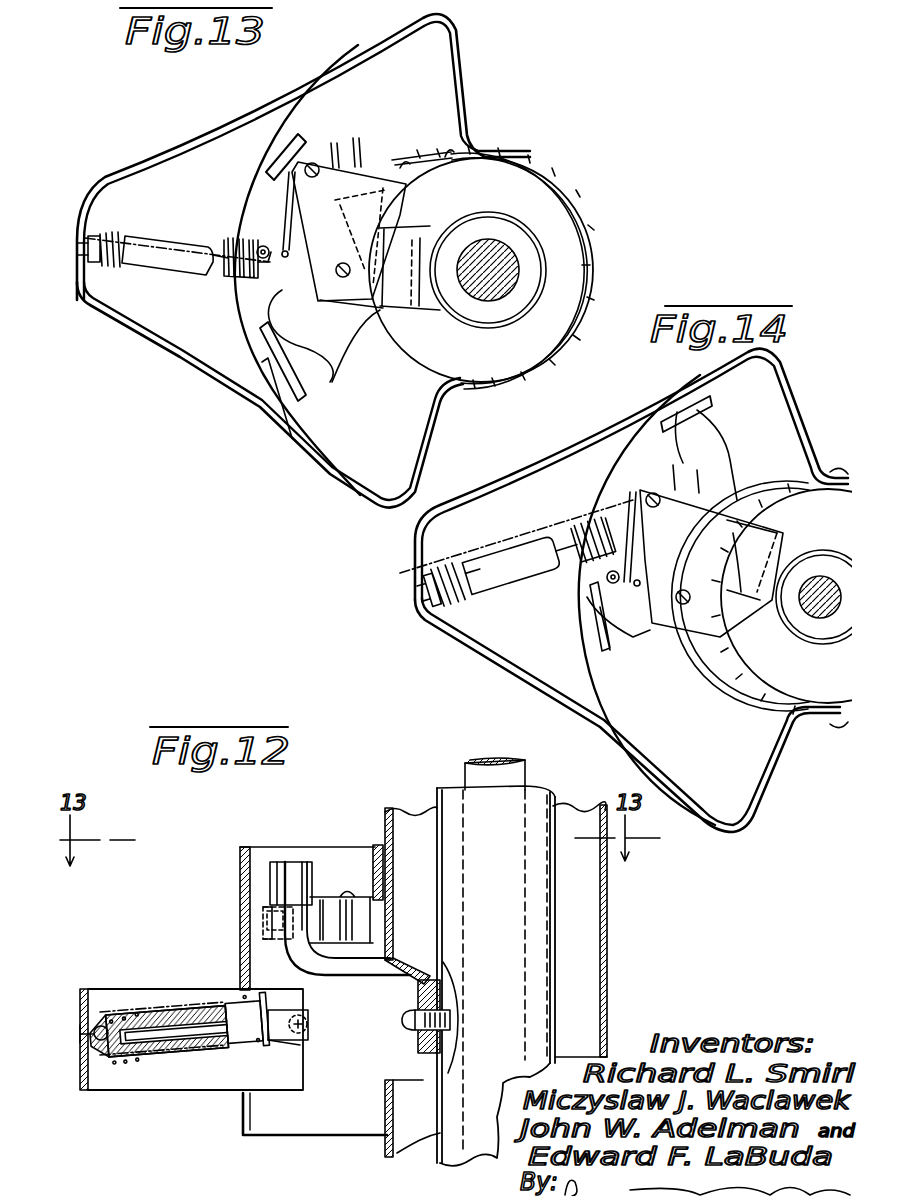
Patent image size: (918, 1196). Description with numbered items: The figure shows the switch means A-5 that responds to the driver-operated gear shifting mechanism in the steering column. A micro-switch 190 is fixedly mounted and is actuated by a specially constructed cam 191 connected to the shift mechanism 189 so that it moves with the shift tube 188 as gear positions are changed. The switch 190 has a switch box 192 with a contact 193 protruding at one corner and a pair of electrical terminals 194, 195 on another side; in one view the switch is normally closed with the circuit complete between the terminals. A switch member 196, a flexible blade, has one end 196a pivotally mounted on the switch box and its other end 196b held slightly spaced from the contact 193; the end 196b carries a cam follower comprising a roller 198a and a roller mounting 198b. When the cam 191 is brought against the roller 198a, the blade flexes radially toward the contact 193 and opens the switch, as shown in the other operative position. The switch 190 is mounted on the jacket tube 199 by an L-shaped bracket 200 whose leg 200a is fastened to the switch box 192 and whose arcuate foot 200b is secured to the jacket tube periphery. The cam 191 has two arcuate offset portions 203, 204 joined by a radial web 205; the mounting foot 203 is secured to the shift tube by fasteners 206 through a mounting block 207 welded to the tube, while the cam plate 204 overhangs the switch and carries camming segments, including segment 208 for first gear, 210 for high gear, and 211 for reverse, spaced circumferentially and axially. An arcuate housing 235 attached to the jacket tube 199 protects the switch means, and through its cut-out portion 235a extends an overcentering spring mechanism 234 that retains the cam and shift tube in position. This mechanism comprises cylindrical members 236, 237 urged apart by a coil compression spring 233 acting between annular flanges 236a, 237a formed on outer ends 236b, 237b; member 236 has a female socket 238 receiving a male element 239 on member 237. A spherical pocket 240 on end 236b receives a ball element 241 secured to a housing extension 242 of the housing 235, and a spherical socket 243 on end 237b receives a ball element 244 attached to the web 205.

In FIG. 13, the shift tube 188 is at (520, 207).
In FIG. 12, the shift tube 188 is at (460, 777).
In FIG. 13, the shift mechanism 189 is at (557, 259).
In FIG. 14, the shift mechanism 189 is at (820, 597).
In FIG. 12, the shift mechanism 189 is at (567, 952).
In FIG. 13, the micro-switch 190 is at (307, 296).
In FIG. 13, the cam 191 is at (356, 369).
In FIG. 13, the switch box 192 is at (380, 183).
In FIG. 12, the switch box 192 is at (362, 947).
In FIG. 13, the contact 193 is at (290, 253).
In FIG. 14, the contact 193 is at (645, 582).
In FIG. 13, the electrical terminal 194 is at (333, 142).
In FIG. 13, the electrical terminal 195 is at (357, 142).
In FIG. 13, the switch member 196 is at (280, 178).
In FIG. 14, the switch member 196 is at (625, 519).
In FIG. 13, the blade element end 196a is at (292, 150).
In FIG. 13, the blade element end 196b is at (338, 205).
In FIG. 13, the roller 198a is at (258, 248).
In FIG. 14, the roller 198a is at (598, 592).
In FIG. 12, the roller 198a is at (262, 922).
In FIG. 13, the roller mounting 198b is at (268, 233).
In FIG. 13, the jacket tube 199 is at (570, 197).
In FIG. 14, the jacket tube 199 is at (819, 596).
In FIG. 12, the jacket tube 199 is at (608, 900).
In FIG. 13, the bracket 200 is at (463, 143).
In FIG. 14, the bracket 200 is at (689, 643).
In FIG. 12, the bracket 200 is at (351, 854).
In FIG. 14, the bracket leg 200a is at (726, 532).
In FIG. 12, the bracket leg 200a is at (325, 895).
In FIG. 14, the bracket foot 200b is at (790, 487).
In FIG. 12, the bracket foot 200b is at (376, 843).
In FIG. 14, the arcuate offset portion 203 is at (758, 600).
In FIG. 12, the arcuate offset portion 203 is at (445, 990).
In FIG. 12, the cam plate 204 is at (255, 887).
In FIG. 14, the web 205 is at (733, 600).
In FIG. 12, the web 205 is at (410, 975).
In FIG. 12, the fastener 206 is at (450, 1020).
In FIG. 14, the mounting block 207 is at (800, 545).
In FIG. 12, the mounting block 207 is at (440, 1030).
In FIG. 13, the camming segment 208 is at (275, 372).
In FIG. 13, the camming segment 210 is at (265, 360).
In FIG. 14, the camming segment 211 is at (683, 410).
In FIG. 14, the coil compression spring 233 is at (490, 548).
In FIG. 12, the coil compression spring 233 is at (137, 1014).
In FIG. 13, the overcentering spring mechanism 234 is at (142, 226).
In FIG. 14, the overcentering spring mechanism 234 is at (516, 594).
In FIG. 12, the overcentering spring mechanism 234 is at (194, 978).
In FIG. 13, the housing 235 is at (314, 472).
In FIG. 14, the housing 235 is at (775, 814).
In FIG. 12, the housing 235 is at (255, 838).
In FIG. 12, the cut-out portion 235a is at (243, 1095).
In FIG. 13, the cylindrical member 236 is at (160, 270).
In FIG. 12, the cylindrical member 236 is at (153, 1053).
In FIG. 12, the annular flange 236a is at (108, 1060).
In FIG. 12, the outer end 236b is at (108, 1010).
In FIG. 13, the cylindrical member 237 is at (225, 285).
In FIG. 14, the cylindrical member 237 is at (593, 540).
In FIG. 12, the cylindrical member 237 is at (248, 1040).
In FIG. 12, the annular flange 237a is at (268, 1050).
In FIG. 12, the outer end 237b is at (278, 1048).
In FIG. 12, the cylindrical female socket 238 is at (203, 1028).
In FIG. 12, the male element 239 is at (185, 1040).
In FIG. 12, the spherical pocket 240 is at (95, 1045).
In FIG. 14, the ball element 241 is at (428, 575).
In FIG. 12, the ball element 241 is at (85, 1030).
In FIG. 13, the housing extension 242 is at (100, 305).
In FIG. 14, the housing extension 242 is at (425, 625).
In FIG. 12, the spherical socket 243 is at (305, 1040).
In FIG. 12, the ball element 244 is at (312, 1030).
In FIG. 13, the switch means A-5 is at (479, 73).